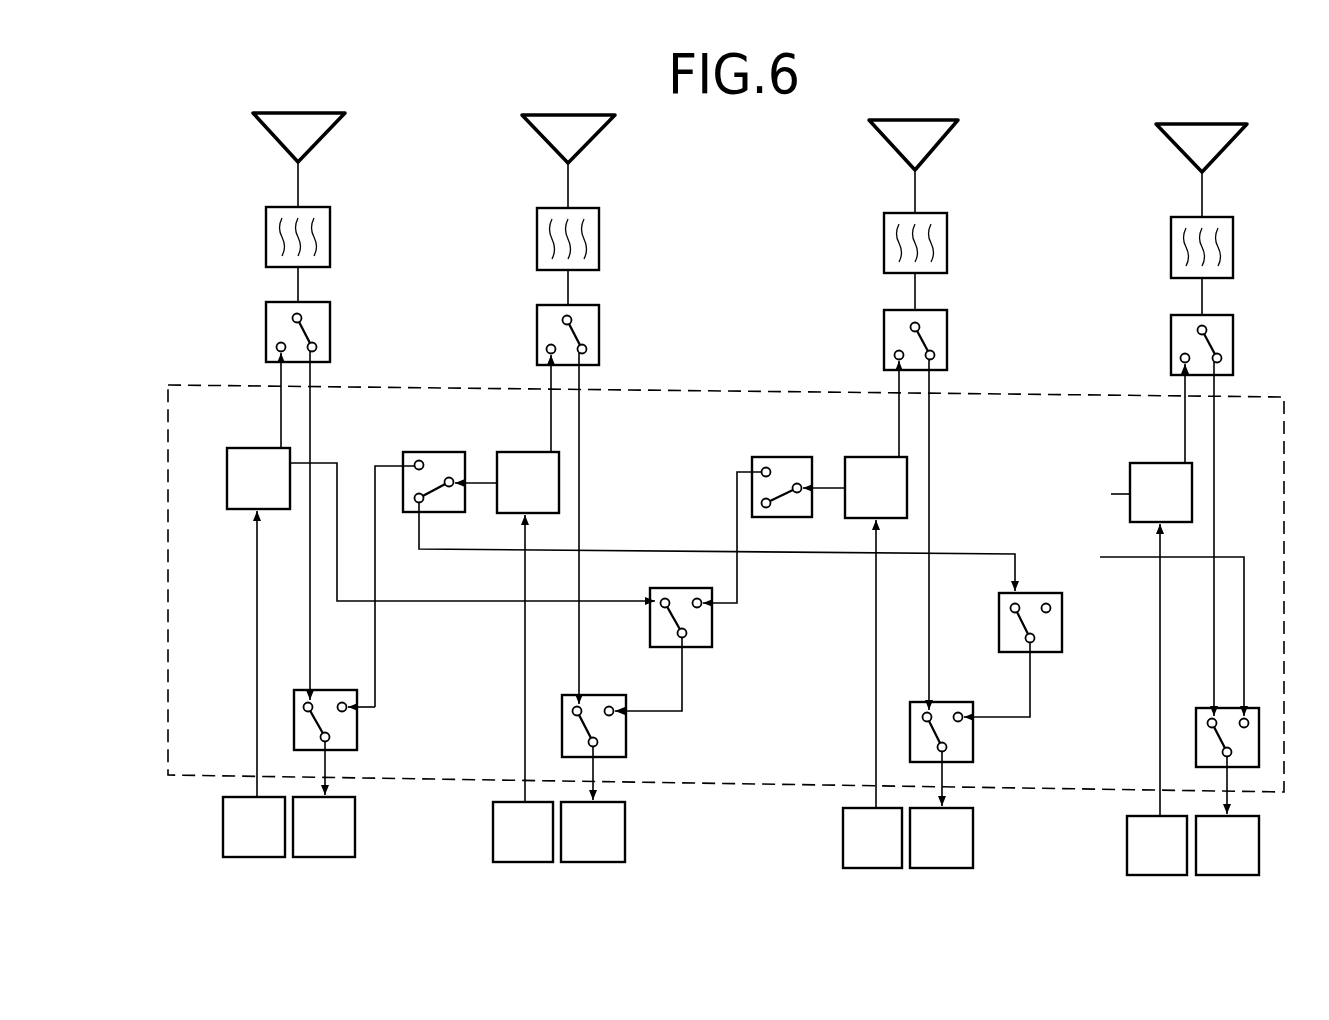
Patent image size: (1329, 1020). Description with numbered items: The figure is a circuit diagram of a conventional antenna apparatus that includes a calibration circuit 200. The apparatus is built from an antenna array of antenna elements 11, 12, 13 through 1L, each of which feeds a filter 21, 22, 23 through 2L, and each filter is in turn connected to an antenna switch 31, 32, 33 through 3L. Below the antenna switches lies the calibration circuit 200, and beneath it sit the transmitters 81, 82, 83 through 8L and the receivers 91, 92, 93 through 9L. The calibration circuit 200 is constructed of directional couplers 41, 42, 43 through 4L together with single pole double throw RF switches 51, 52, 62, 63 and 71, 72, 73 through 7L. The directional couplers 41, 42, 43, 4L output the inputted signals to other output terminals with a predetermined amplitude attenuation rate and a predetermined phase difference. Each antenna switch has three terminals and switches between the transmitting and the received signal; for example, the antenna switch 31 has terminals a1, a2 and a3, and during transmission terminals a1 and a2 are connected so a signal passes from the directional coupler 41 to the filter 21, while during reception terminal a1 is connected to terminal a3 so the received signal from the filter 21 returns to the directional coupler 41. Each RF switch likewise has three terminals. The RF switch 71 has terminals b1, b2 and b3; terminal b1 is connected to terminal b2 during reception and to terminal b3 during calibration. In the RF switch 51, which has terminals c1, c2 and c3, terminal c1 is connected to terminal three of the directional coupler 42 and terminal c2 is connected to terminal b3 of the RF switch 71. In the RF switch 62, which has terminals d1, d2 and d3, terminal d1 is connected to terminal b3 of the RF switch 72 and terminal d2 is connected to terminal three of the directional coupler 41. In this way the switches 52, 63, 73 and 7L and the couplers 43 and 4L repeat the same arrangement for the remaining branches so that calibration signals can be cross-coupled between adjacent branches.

The antenna element 11 is at (326, 133).
The antenna element 12 is at (596, 135).
The antenna element 13 is at (938, 142).
The antenna element 1L is at (1228, 145).
The filter 21 is at (330, 237).
The filter 22 is at (599, 240).
The filter 23 is at (947, 243).
The filter 2L is at (1233, 246).
The antenna switch 31 is at (330, 315).
The antenna switch 32 is at (599, 318).
The antenna switch 33 is at (947, 338).
The antenna switch 3L is at (1233, 343).
The directional coupler 41 is at (227, 470).
The directional coupler 42 is at (516, 452).
The directional coupler 43 is at (854, 457).
The directional coupler 4L is at (1144, 463).
The RF switch 51 is at (407, 512).
The RF switch 52 is at (788, 457).
The RF switch 62 is at (712, 631).
The RF switch 63 is at (1040, 593).
The RF switch 71 is at (357, 722).
The RF switch 72 is at (597, 695).
The RF switch 73 is at (951, 702).
The RF switch 7L is at (1202, 708).
The transmitter 81 is at (235, 857).
The transmitter 82 is at (505, 862).
The transmitter 83 is at (855, 868).
The transmitter 8L is at (1138, 875).
The receiver 91 is at (338, 857).
The receiver 92 is at (606, 862).
The receiver 93 is at (952, 868).
The receiver 9L is at (1236, 875).
The calibration circuit 200 is at (1088, 394).
The terminal a1 is at (293, 318).
The terminal a2 is at (277, 347).
The terminal a3 is at (316, 347).
The terminal b1 is at (329, 737).
The terminal b2 is at (305, 703).
The terminal b3 is at (342, 702).
The terminal c1 is at (449, 477).
The terminal c2 is at (419, 460).
The terminal c3 is at (421, 503).
The terminal d1 is at (685, 637).
The terminal d2 is at (663, 599).
The terminal d3 is at (696, 598).